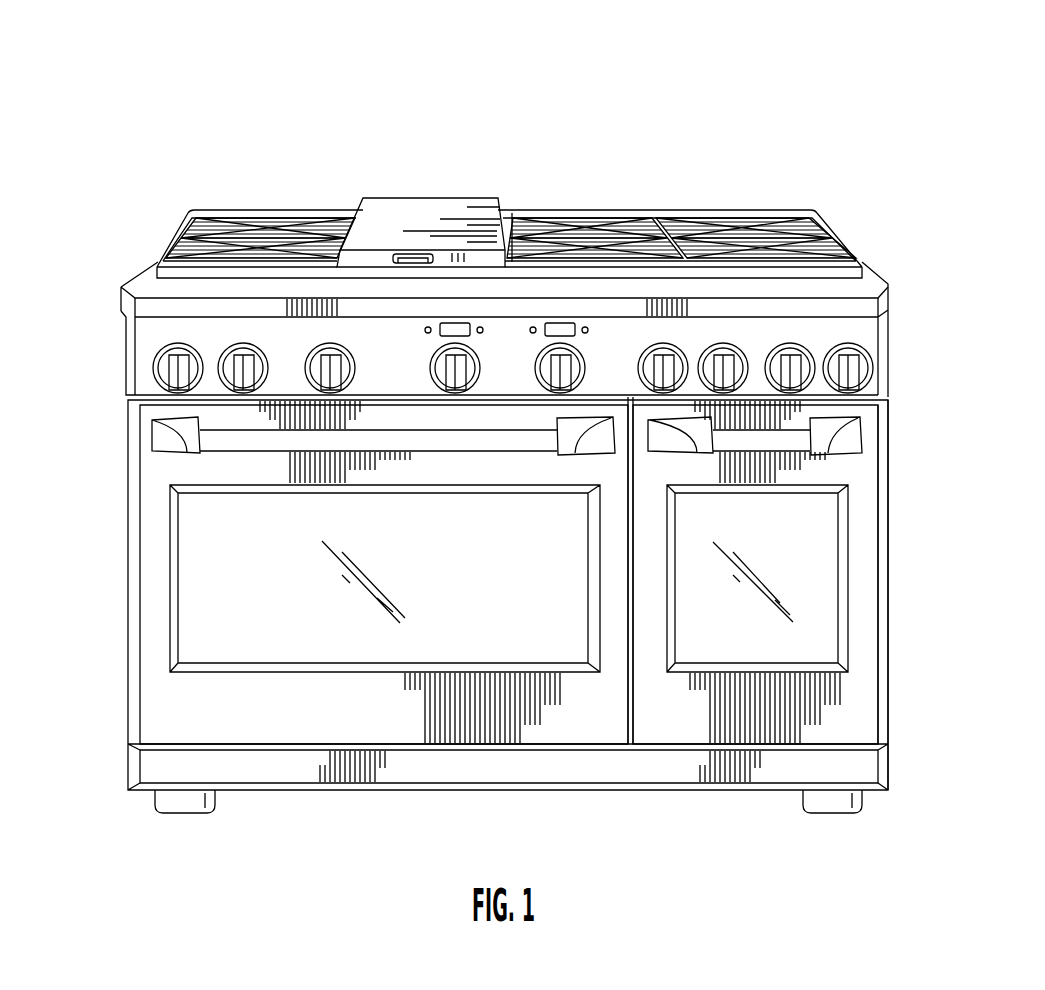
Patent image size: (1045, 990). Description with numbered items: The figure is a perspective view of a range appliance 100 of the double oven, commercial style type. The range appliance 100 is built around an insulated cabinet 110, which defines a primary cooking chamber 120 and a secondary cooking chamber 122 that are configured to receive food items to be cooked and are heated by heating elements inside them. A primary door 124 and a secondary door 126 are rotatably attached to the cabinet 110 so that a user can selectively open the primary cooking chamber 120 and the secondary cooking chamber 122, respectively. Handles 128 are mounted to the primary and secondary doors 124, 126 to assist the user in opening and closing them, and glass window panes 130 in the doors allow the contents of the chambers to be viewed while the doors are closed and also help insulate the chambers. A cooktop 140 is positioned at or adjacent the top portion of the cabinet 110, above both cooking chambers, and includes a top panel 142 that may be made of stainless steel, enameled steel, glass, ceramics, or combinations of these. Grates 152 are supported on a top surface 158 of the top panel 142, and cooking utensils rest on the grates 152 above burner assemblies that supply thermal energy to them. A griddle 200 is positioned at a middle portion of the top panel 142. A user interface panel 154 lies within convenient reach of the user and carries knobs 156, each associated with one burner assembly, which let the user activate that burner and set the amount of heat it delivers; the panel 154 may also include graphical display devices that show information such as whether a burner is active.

The range appliance 100 is at (780, 104).
The insulated cabinet 110 is at (567, 791).
The primary cooking chamber 120 is at (129, 628).
The secondary cooking chamber 122 is at (890, 551).
The primary door 124 is at (183, 707).
The secondary door 126 is at (863, 703).
The handle 128 is at (217, 446).
The glass window pane 130 is at (490, 554).
The cooktop 140 is at (902, 268).
The top panel 142 is at (179, 290).
The grate 152 is at (280, 208).
The user interface panel 154 is at (512, 318).
The knob 156 is at (320, 346).
The top surface 158 is at (149, 268).
The griddle 200 is at (425, 197).